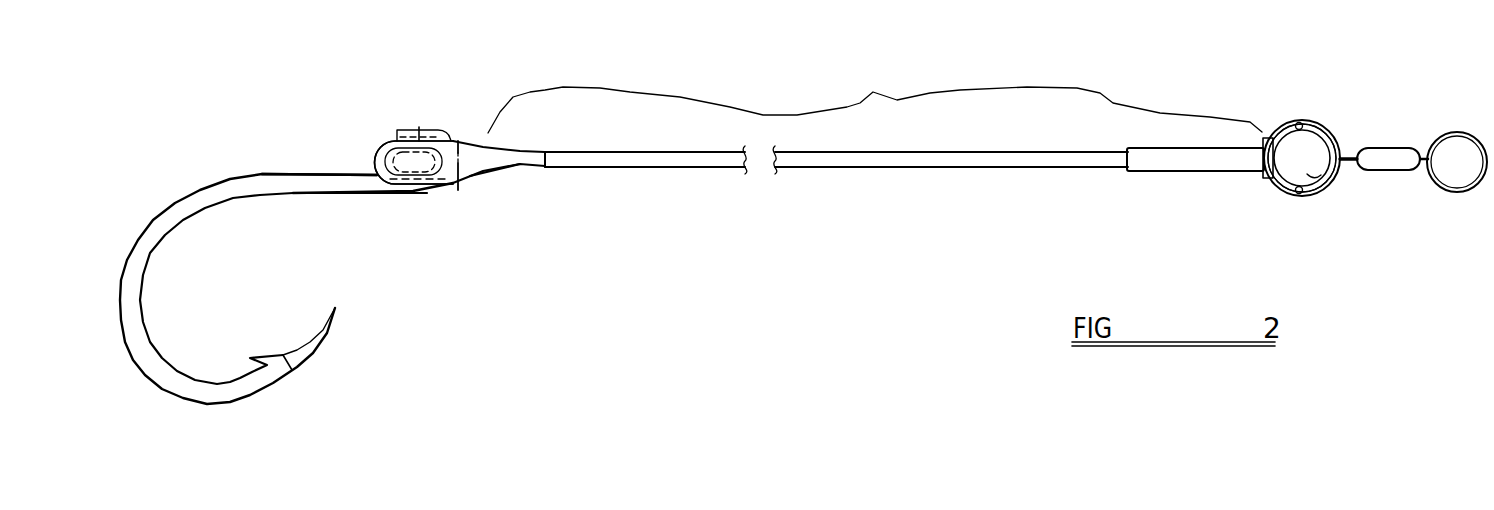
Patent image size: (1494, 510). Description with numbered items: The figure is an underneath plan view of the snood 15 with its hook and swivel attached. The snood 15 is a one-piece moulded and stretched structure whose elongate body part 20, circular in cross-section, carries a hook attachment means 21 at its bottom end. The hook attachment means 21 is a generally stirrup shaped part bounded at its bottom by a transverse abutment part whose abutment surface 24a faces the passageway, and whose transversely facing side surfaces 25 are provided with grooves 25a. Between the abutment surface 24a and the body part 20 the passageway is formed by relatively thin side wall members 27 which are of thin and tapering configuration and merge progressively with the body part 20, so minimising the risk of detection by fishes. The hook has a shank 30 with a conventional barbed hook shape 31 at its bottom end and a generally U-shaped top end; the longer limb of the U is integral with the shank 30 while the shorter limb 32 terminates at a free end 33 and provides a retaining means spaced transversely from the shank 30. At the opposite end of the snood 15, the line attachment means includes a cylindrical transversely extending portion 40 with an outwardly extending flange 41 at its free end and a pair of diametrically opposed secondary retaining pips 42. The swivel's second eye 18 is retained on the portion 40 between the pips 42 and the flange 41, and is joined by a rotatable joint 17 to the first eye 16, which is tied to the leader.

The snood 15 is at (888, 151).
The first eye 16 is at (1453, 132).
The rotatable joint 17 is at (1377, 147).
The second eye 18 is at (1317, 122).
The body part 20 is at (873, 92).
The hook attachment means 21 is at (503, 191).
The abutment surface 24a is at (450, 185).
The side surfaces 25 is at (457, 141).
The grooves 25a is at (419, 126).
The side wall members 27 is at (493, 119).
The shank 30 is at (298, 190).
The barbed hook shape 31 is at (197, 379).
The shorter limb 32 is at (397, 131).
The free end 33 is at (393, 141).
The transversely extending portion 40 is at (1320, 190).
The flange 41 is at (1333, 130).
The secondary retaining pips 42 is at (1293, 122).